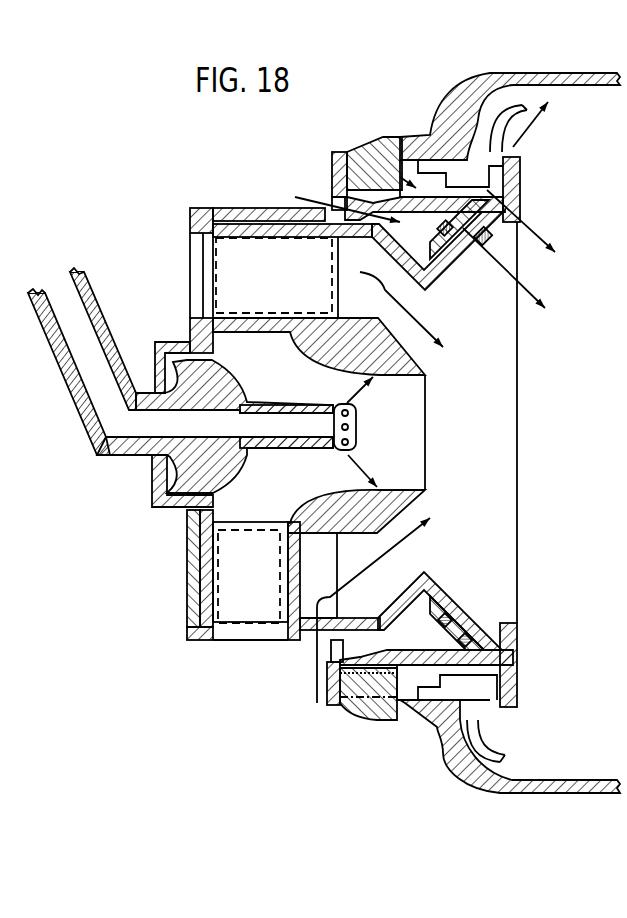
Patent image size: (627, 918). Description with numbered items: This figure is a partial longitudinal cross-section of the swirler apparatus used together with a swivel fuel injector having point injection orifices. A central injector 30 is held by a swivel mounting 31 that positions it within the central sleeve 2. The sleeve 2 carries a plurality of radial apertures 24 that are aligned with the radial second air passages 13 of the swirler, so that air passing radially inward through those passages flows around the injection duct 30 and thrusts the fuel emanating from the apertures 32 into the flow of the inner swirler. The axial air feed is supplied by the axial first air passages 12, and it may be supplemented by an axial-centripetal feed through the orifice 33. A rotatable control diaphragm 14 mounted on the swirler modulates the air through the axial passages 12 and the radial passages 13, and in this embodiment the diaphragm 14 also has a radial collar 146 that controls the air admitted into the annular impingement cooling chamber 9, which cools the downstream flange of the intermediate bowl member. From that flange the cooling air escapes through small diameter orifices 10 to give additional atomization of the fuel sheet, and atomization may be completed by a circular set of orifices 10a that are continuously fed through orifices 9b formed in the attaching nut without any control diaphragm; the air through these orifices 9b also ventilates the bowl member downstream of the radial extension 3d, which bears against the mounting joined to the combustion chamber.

The central sleeve 2 is at (200, 512).
The radial extension 3d is at (518, 690).
The annular chamber 9 is at (333, 203).
The orifices 9b is at (370, 150).
The small diameter orifices 10 is at (478, 238).
The circular set of orifices 10a is at (520, 215).
The first air passages 12 is at (360, 272).
The second air passages 13 is at (328, 468).
The control diaphragm 14 is at (203, 641).
The radial apertures 24 is at (238, 522).
The central injector 30 is at (147, 467).
The swivel mounting 31 is at (180, 488).
The apertures 32 is at (357, 415).
The orifice 33 is at (307, 630).
The radial collar 146 is at (331, 708).